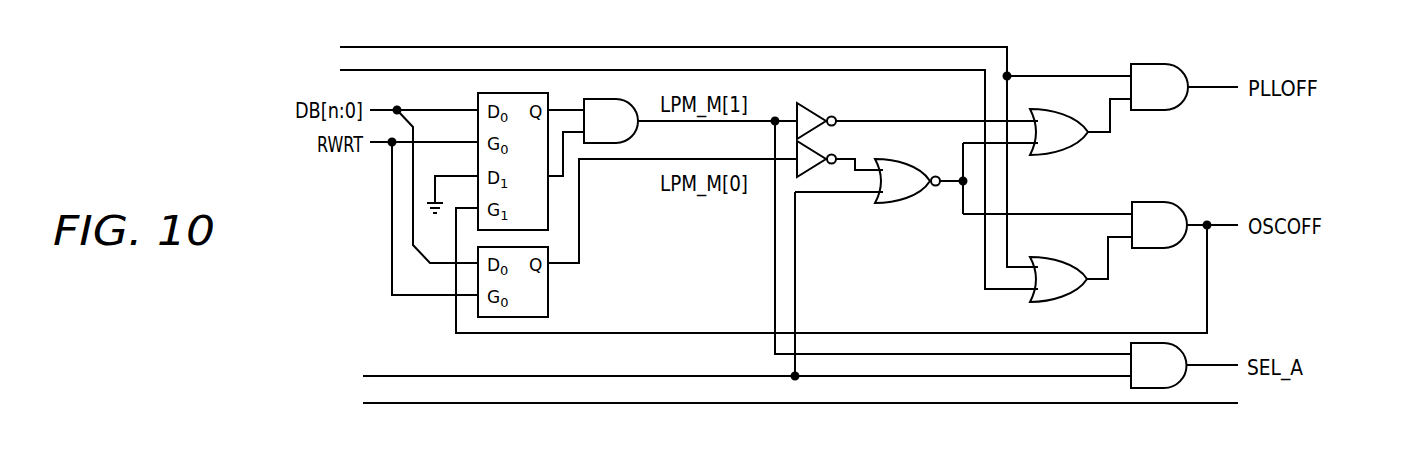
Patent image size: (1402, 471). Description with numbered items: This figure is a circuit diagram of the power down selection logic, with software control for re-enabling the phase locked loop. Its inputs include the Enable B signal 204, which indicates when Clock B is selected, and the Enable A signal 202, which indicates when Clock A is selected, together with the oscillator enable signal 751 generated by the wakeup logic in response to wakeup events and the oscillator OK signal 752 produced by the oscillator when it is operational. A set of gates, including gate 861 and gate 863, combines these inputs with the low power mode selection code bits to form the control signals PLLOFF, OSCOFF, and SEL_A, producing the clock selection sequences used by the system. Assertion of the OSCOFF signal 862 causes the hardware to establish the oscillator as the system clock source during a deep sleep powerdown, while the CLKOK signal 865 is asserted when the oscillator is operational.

The Enable B signal 204 is at (293, 48).
The Enable A signal 202 is at (293, 69).
The oscillator enable signal 751 is at (293, 378).
The oscillator OK signal 752 is at (293, 400).
The gate 861 is at (1206, 58).
The OSCOFF signal 862 is at (1160, 201).
The gate 863 is at (1186, 352).
The CLKOK signal 865 is at (1315, 405).